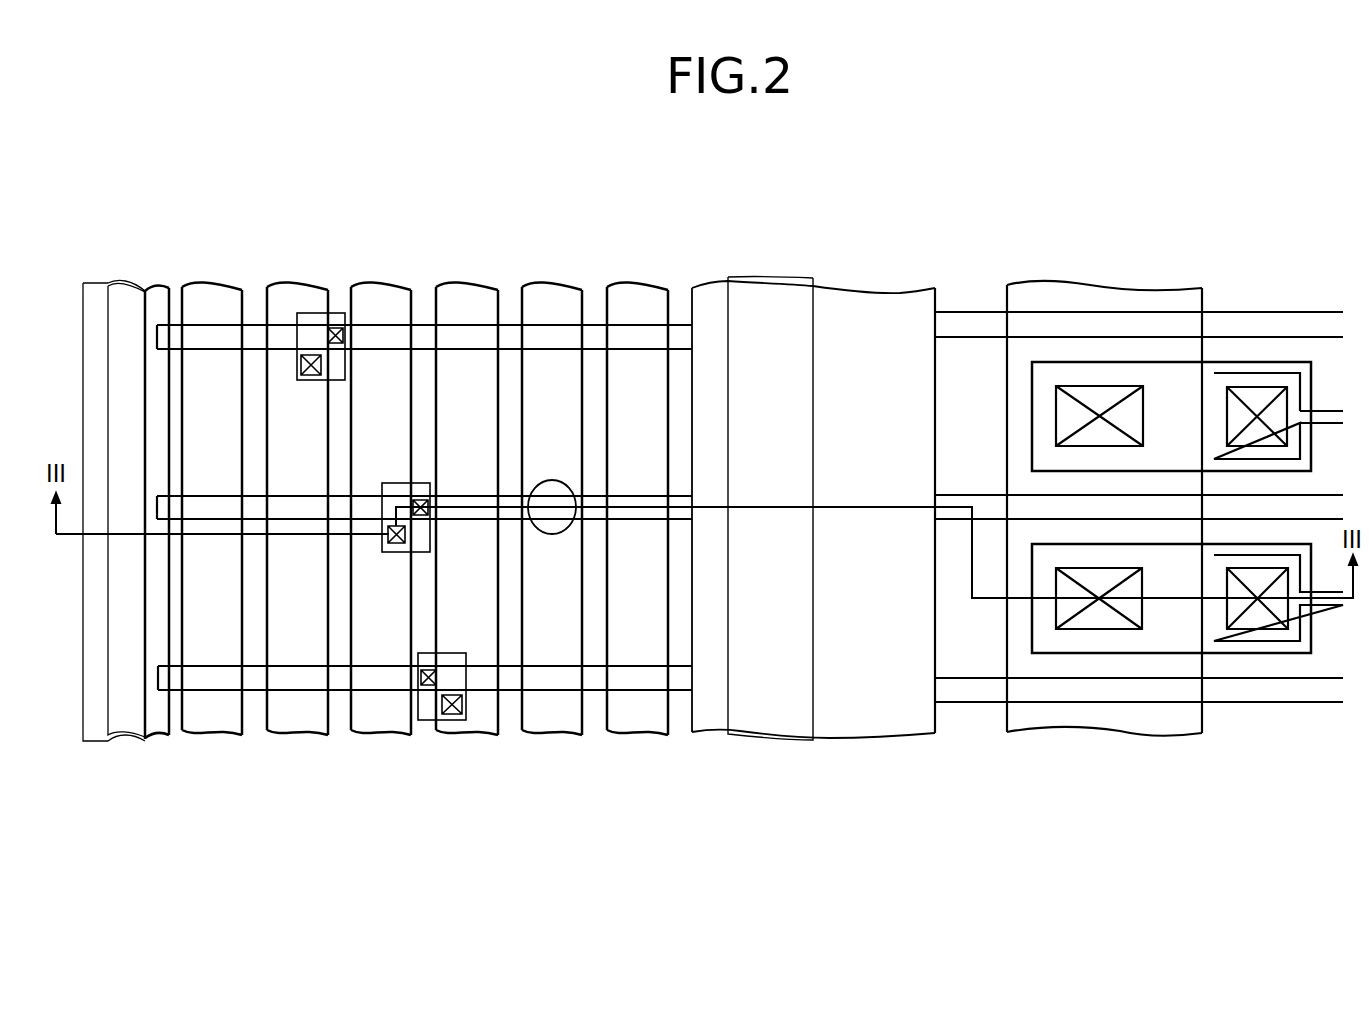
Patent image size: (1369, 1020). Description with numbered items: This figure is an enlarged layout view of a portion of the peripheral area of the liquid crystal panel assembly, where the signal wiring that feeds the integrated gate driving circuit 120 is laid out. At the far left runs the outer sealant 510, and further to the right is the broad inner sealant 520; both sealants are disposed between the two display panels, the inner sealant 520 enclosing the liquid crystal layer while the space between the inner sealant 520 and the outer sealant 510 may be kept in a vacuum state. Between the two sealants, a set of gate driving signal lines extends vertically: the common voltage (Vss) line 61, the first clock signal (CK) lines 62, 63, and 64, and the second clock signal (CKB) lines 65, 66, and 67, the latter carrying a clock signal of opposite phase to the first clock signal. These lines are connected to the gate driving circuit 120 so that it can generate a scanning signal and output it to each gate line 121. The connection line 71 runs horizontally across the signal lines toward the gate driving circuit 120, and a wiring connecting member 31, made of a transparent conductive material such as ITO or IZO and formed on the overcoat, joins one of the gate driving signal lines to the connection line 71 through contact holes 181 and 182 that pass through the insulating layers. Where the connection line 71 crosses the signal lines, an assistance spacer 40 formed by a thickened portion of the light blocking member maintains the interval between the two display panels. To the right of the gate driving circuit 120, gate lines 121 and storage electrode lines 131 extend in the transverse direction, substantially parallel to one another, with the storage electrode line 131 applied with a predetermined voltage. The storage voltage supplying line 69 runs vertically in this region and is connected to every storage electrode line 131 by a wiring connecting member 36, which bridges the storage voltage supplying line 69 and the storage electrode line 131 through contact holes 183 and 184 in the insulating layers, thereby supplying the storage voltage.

The outer sealant 510 is at (100, 741).
The inner sealant 520 is at (771, 737).
The common voltage (Vss) line 61 is at (153, 289).
The first clock signal (CK) line 62 is at (212, 288).
The first clock signal (CK) line 63 is at (297, 290).
The first clock signal (CK) line 64 is at (382, 288).
The second clock signal (CKB) line 65 is at (468, 288).
The second clock signal (CKB) line 66 is at (553, 288).
The second clock signal (CKB) line 67 is at (637, 288).
The storage voltage supplying line 69 is at (1105, 738).
The connection line 71 is at (593, 323).
The wiring connecting member 31 is at (313, 313).
The contact hole 181 is at (312, 375).
The contact hole 182 is at (337, 328).
The assistance spacer 40 is at (552, 480).
The gate driving circuit 120 is at (937, 717).
The gate line 121 is at (964, 312).
The wiring connecting member 36 is at (1143, 360).
The contact hole 183 is at (1082, 385).
The contact hole 184 is at (1248, 386).
The storage electrode line 131 is at (1330, 405).